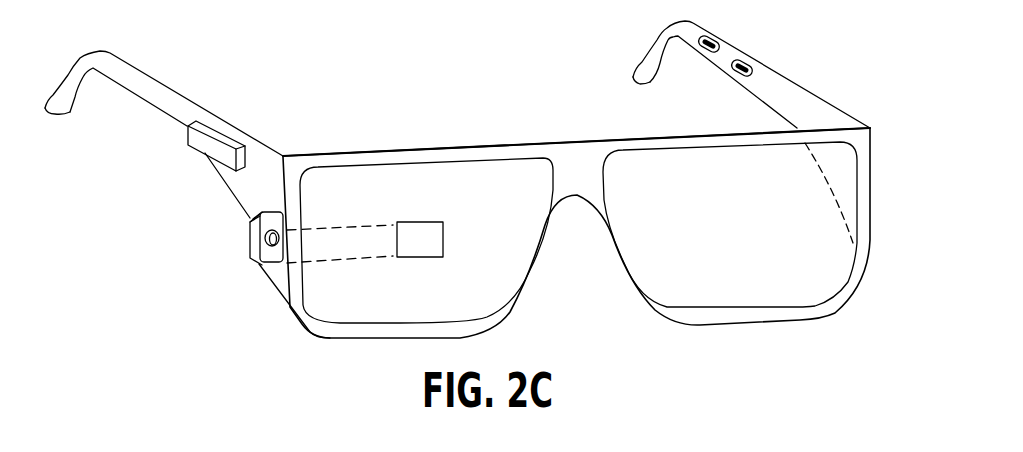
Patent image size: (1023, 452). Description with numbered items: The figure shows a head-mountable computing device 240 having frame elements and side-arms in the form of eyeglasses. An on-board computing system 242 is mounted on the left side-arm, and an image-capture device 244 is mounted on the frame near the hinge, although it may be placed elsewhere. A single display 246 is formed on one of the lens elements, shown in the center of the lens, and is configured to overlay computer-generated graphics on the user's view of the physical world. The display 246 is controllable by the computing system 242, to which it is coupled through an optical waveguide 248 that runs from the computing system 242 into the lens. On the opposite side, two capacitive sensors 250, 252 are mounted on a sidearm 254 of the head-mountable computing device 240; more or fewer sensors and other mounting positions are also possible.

The head-mountable computing device 240 is at (529, 179).
The on-board computing system 242 is at (205, 145).
The image-capture device 244 is at (251, 241).
The display 246 is at (415, 257).
The optical waveguide 248 is at (330, 261).
The capacitive sensor 250 is at (697, 46).
The capacitive sensor 252 is at (733, 70).
The sidearm 254 is at (790, 98).